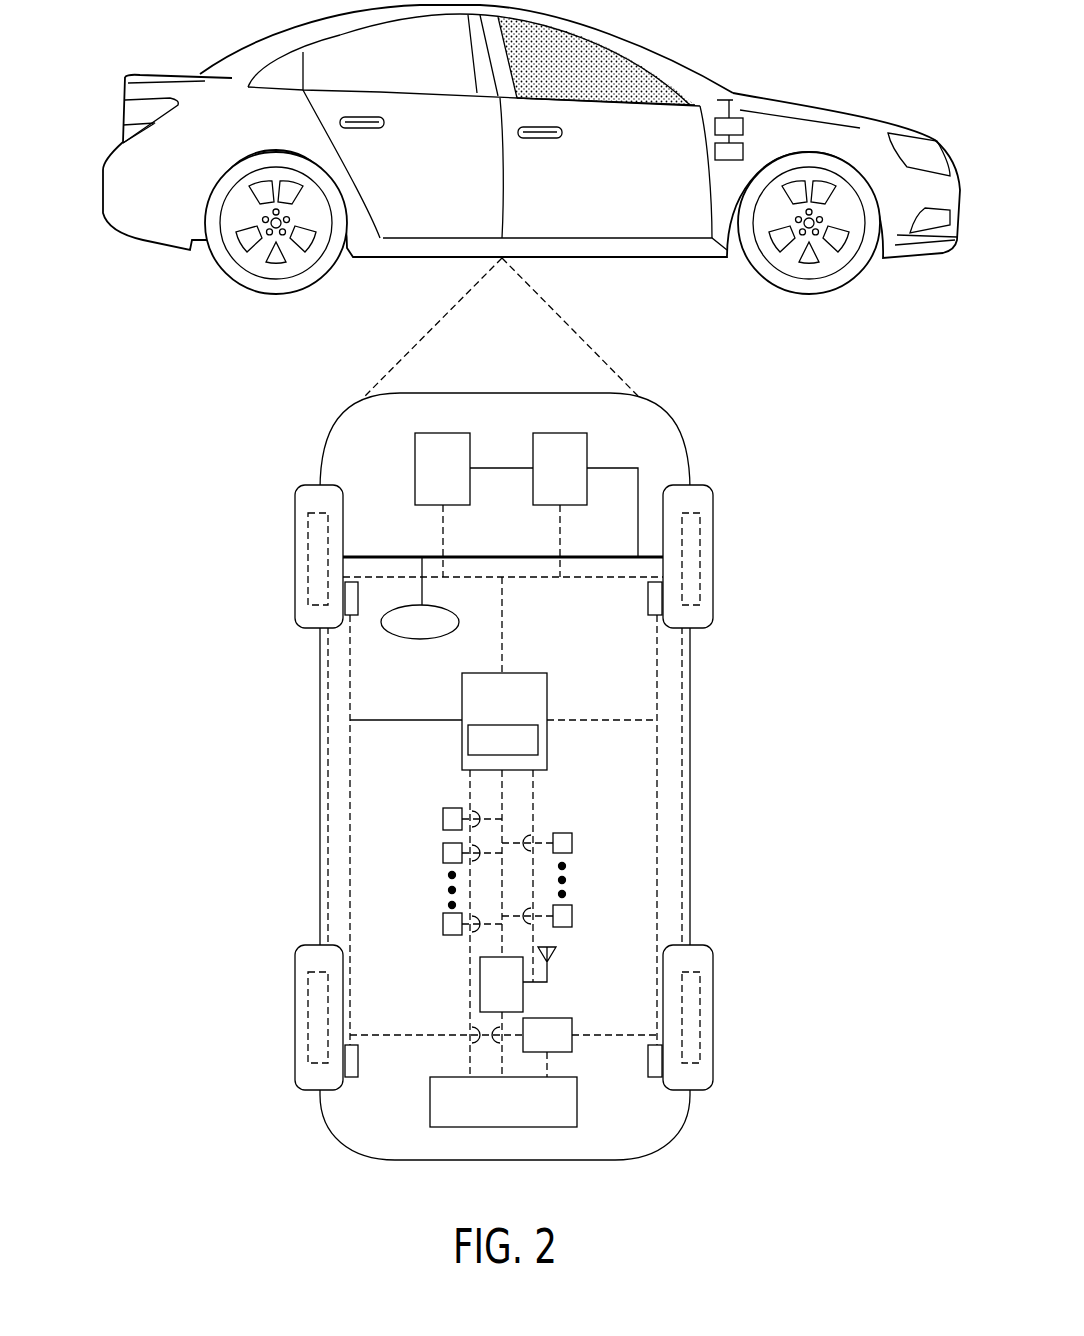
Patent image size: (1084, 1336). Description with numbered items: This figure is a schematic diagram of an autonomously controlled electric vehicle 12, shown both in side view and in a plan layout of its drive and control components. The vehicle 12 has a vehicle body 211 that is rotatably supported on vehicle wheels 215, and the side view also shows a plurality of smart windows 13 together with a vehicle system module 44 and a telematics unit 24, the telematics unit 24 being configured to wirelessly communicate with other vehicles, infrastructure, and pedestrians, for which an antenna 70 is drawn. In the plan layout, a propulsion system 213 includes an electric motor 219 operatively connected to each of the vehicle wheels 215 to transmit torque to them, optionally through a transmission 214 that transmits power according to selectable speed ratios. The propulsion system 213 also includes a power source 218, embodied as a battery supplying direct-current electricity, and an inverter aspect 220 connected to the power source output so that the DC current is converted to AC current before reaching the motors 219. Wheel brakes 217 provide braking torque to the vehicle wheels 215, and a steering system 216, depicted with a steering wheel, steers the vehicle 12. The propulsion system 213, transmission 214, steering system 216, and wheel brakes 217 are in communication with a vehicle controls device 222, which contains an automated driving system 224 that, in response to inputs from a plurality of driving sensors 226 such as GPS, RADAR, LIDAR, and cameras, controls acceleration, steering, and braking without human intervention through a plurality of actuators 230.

The vehicle 12 is at (103, 180).
The smart windows 13 is at (637, 55).
The vehicle system module (VSM) 44 is at (745, 122).
The telematics unit 24 is at (715, 152).
The antenna 70 is at (556, 977).
The vehicle body 211 is at (690, 768).
The propulsion system 213 is at (415, 466).
The transmission 214 is at (587, 445).
The vehicle wheels 215 is at (343, 535).
The steering system 216 is at (420, 640).
The wheel brakes 217 is at (358, 605).
The power source 218 is at (430, 1100).
The electric motor 219 is at (700, 528).
The inverter aspect 220 is at (572, 1025).
The vehicle controls device 222 is at (547, 730).
The automated driving system (ADS) 224 is at (538, 752).
The driving sensors 226 is at (443, 818).
The actuators 230 is at (572, 843).